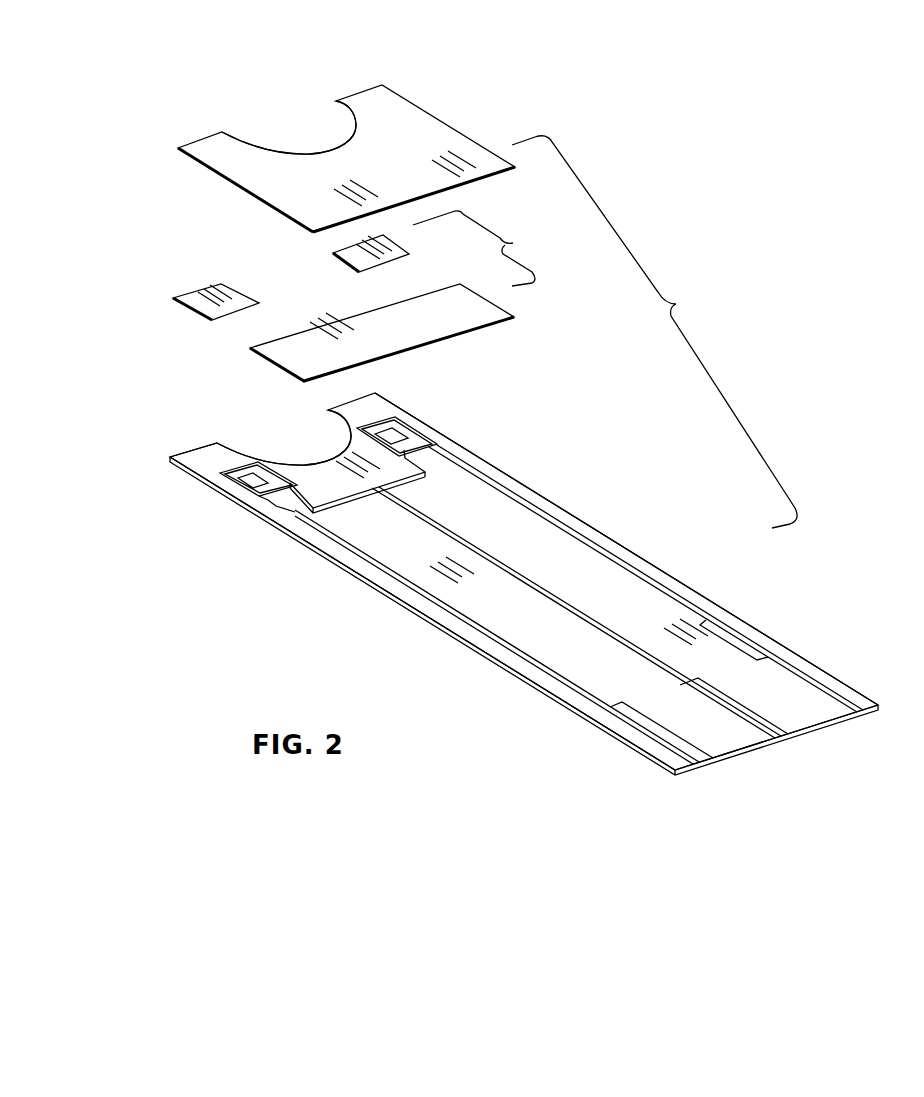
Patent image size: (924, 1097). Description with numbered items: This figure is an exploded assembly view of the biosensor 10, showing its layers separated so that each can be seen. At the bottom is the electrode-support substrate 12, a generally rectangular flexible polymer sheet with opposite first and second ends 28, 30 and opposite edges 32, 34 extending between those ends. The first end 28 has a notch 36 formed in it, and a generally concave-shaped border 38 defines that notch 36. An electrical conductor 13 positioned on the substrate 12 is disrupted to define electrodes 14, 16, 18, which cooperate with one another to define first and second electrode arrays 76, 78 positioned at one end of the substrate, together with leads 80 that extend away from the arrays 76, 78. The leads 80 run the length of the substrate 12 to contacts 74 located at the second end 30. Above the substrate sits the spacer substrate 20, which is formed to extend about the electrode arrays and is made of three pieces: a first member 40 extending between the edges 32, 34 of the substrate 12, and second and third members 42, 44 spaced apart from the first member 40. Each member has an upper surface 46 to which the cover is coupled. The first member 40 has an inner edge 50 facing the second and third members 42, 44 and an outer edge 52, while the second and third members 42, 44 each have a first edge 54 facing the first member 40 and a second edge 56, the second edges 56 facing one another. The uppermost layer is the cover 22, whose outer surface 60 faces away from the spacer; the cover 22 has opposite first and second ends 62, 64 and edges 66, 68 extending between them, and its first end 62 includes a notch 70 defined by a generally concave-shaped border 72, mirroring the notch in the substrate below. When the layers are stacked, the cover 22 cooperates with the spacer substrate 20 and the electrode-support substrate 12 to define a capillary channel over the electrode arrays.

The biosensor 10 is at (676, 304).
The electrode-support substrate 12 is at (262, 551).
The electrical conductor 13 is at (588, 598).
The electrode 14 is at (428, 611).
The electrode 16 is at (540, 585).
The electrode 18 is at (662, 570).
The spacer substrate 20 is at (513, 243).
The cover 22 is at (512, 123).
The first end 28 is at (180, 452).
The second end 30 is at (747, 750).
The edge 32 is at (558, 698).
The edge 34 is at (783, 645).
The notch 36 is at (230, 429).
The border 38 is at (340, 440).
The first member 40 is at (499, 338).
The second member 42 is at (152, 301).
The third member 44 is at (322, 248).
The upper surface 46 is at (388, 338).
The inner edge 50 is at (323, 331).
The outer edge 52 is at (414, 345).
The first edge 54 is at (402, 263).
The second edge 56 is at (345, 270).
The outer surface 60 is at (362, 176).
The first end 62 is at (197, 142).
The second end 64 is at (497, 175).
The edge 66 is at (212, 172).
The edge 68 is at (428, 111).
The notch 70 is at (250, 104).
The border 72 is at (350, 140).
The contacts 74 is at (775, 733).
The first electrode array 76 is at (262, 478).
The second electrode array 78 is at (402, 438).
The leads 80 is at (545, 512).